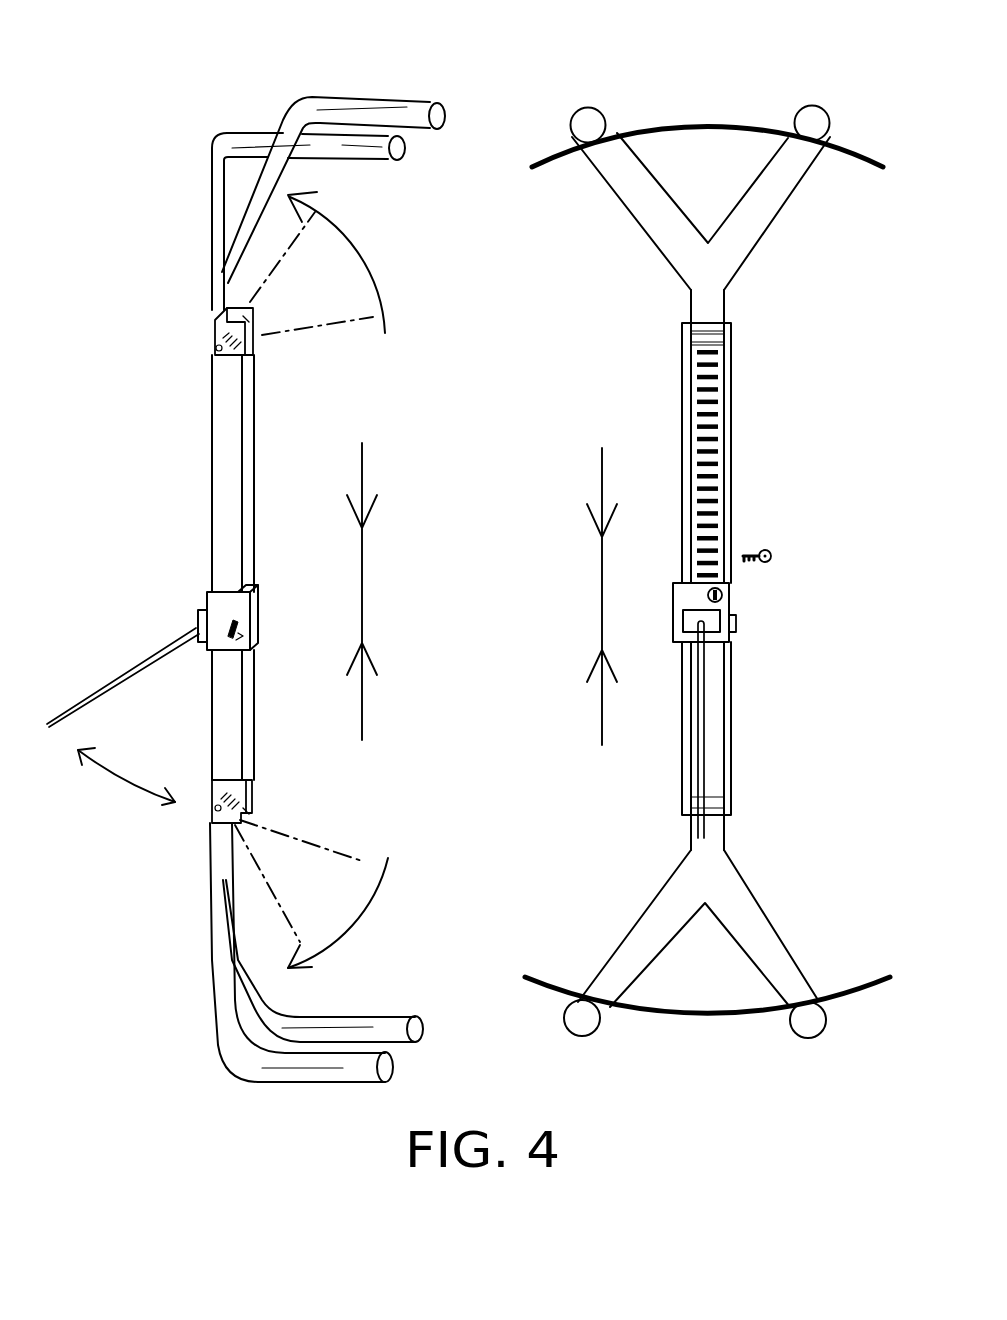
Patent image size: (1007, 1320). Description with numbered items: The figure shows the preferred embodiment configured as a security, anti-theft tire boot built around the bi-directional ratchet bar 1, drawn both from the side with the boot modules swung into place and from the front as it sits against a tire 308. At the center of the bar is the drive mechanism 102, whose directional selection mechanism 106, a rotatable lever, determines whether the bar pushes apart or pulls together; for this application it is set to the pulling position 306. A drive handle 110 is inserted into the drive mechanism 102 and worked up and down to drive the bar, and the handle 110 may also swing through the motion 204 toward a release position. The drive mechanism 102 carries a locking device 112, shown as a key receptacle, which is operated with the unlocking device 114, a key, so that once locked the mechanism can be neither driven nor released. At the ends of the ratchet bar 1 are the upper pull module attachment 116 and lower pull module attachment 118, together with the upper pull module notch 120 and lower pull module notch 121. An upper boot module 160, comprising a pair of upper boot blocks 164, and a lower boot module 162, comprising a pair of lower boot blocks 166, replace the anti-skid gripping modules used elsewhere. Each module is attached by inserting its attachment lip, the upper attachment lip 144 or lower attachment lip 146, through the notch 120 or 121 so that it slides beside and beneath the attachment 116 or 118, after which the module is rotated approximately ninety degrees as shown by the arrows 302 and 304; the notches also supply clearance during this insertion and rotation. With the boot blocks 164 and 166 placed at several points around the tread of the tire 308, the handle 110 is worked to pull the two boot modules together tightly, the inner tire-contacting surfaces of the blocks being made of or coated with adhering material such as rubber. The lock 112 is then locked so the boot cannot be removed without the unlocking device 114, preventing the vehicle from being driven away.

The ratchet bar 1 is at (187, 520).
The drive mechanism 102 is at (242, 607).
The directional selection mechanism 106 is at (238, 628).
The drive handle 110 is at (123, 680).
The locking device 112 is at (722, 595).
The unlocking device 114 is at (772, 553).
The upper ratchet bar pull module attachment 116 is at (217, 333).
The lower ratchet bar pull module attachment 118 is at (215, 793).
The upper pull module notch 120 is at (247, 320).
The lower pull module notch 121 is at (248, 813).
The upper attachment lip 144 is at (232, 347).
The lower attachment lip 146 is at (245, 795).
The upper boot module 160 is at (193, 165).
The lower boot module 162 is at (181, 1014).
The upper boot blocks 164 is at (338, 142).
The lower boot blocks 166 is at (355, 1037).
The rod swing direction 204 is at (112, 773).
The rotation arrow for upper module 302 is at (385, 330).
The rotation arrow for lower module 304 is at (388, 860).
The pulling position 306 is at (600, 590).
The tire 308 is at (857, 162).